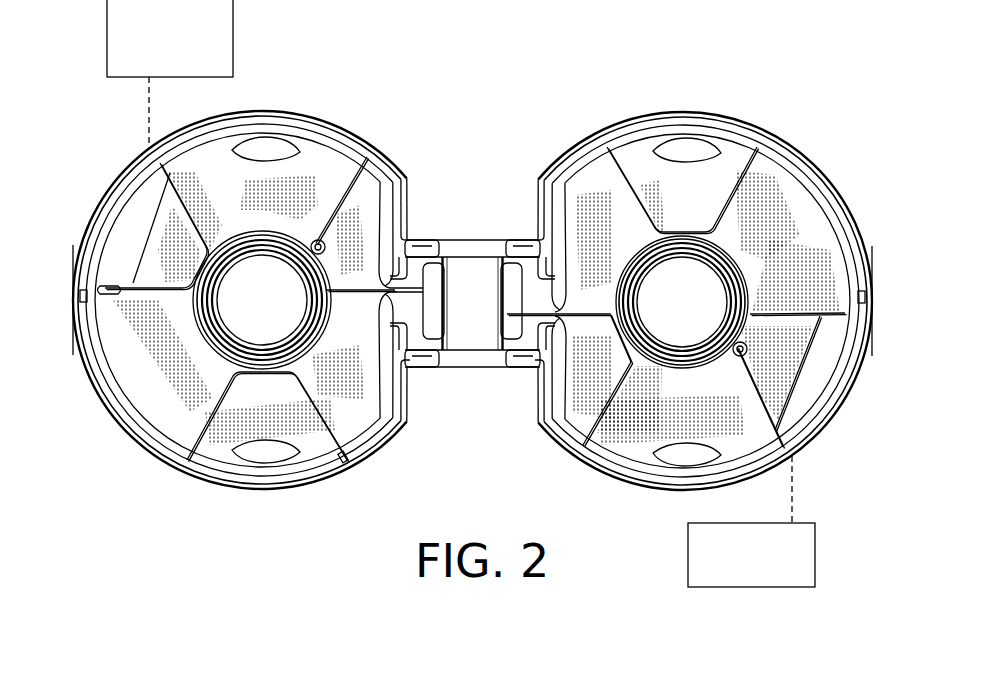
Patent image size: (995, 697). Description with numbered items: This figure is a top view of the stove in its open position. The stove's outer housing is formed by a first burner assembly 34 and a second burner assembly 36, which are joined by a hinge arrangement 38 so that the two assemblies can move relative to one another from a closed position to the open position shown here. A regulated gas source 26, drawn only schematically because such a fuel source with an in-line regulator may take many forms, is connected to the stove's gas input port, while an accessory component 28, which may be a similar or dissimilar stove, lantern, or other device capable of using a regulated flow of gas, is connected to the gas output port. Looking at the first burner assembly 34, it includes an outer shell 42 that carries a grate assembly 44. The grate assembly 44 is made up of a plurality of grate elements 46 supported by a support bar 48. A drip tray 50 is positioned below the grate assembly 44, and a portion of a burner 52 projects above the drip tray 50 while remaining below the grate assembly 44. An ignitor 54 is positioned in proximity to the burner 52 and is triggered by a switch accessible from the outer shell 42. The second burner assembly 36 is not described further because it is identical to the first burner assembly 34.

The regulated gas source 26 is at (233, 33).
The accessory component 28 is at (688, 563).
The first burner assembly 34 is at (247, 294).
The second burner assembly 36 is at (795, 128).
The hinge arrangement 38 is at (466, 232).
The outer shell 42 is at (155, 462).
The grate assembly 44 is at (143, 303).
The grate elements 46 is at (198, 215).
The support bar 48 is at (405, 185).
The drip tray 50 is at (150, 387).
The burner 52 is at (353, 462).
The ignitor 54 is at (324, 246).